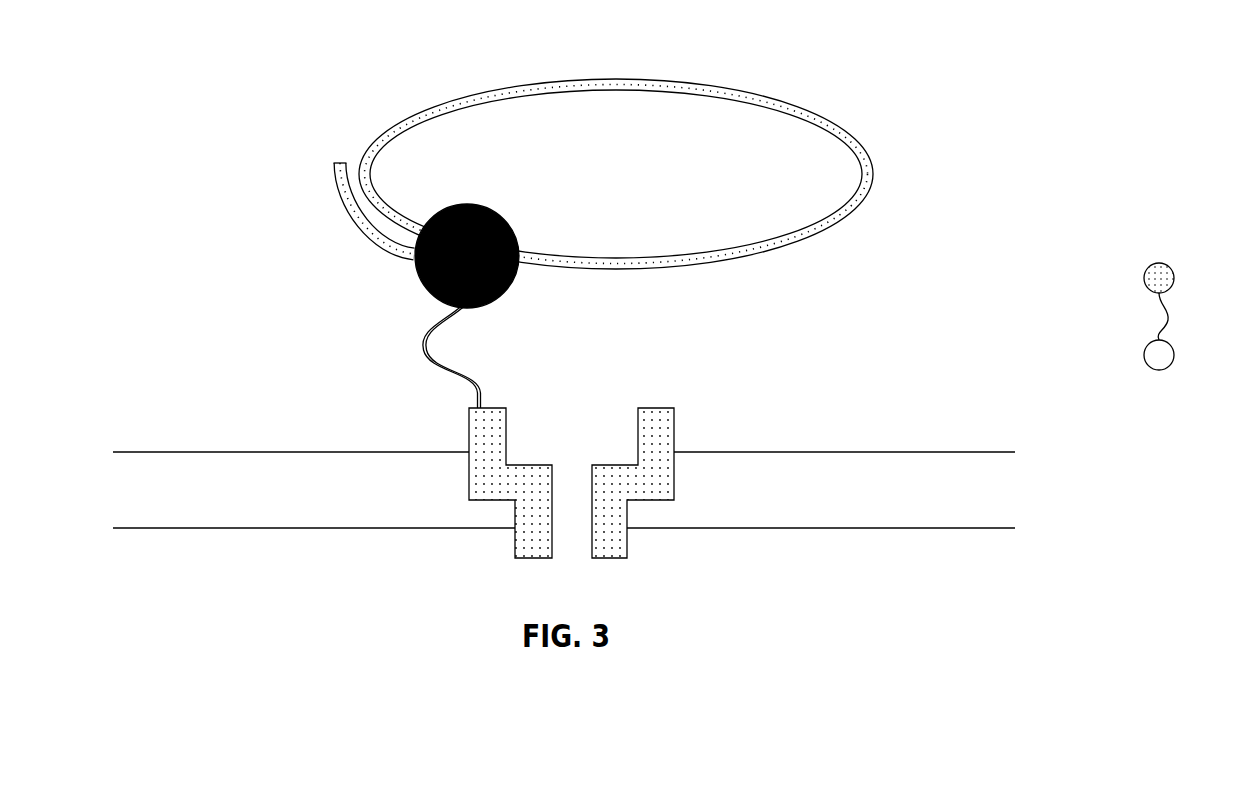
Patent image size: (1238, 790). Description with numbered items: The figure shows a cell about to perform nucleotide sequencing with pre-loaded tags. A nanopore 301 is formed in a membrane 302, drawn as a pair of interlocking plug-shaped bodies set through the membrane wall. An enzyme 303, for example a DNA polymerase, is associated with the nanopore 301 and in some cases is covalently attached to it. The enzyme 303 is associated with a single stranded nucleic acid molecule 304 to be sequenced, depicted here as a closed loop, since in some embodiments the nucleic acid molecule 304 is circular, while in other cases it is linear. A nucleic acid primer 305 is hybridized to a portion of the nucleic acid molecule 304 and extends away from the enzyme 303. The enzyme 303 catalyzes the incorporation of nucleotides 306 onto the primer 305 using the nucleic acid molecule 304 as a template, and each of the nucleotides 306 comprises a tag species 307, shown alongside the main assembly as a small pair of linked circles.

The nanopore 301 is at (659, 404).
The membrane 302 is at (750, 447).
The enzyme 303 is at (409, 268).
The single stranded nucleic acid molecule 304 is at (789, 96).
The nucleic acid primer 305 is at (329, 180).
The nucleotides 306 is at (1164, 260).
The tag species 307 is at (1163, 376).